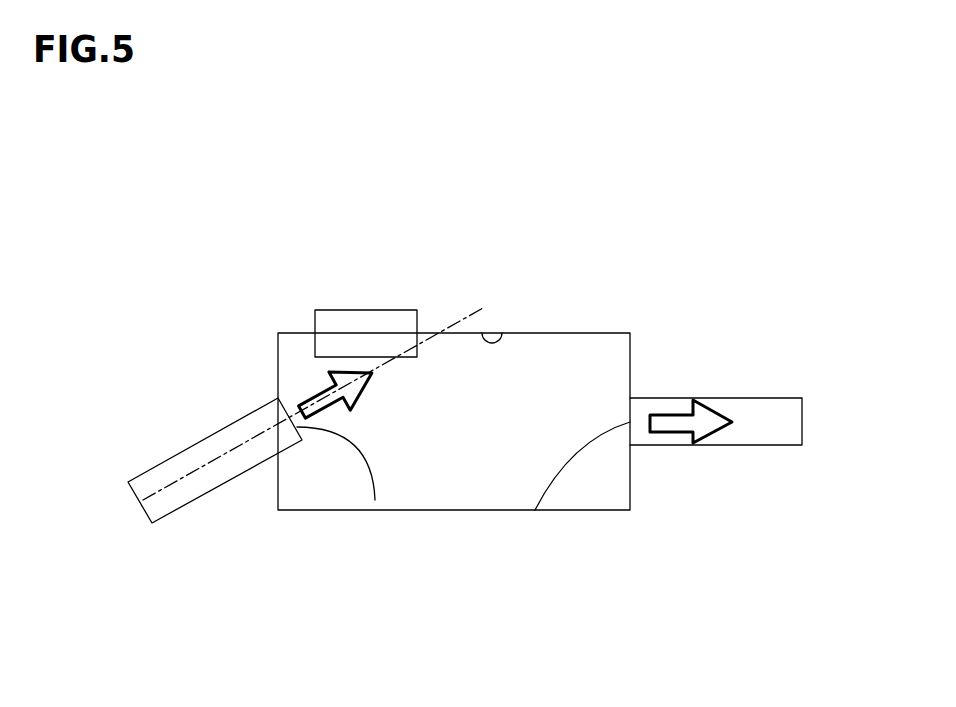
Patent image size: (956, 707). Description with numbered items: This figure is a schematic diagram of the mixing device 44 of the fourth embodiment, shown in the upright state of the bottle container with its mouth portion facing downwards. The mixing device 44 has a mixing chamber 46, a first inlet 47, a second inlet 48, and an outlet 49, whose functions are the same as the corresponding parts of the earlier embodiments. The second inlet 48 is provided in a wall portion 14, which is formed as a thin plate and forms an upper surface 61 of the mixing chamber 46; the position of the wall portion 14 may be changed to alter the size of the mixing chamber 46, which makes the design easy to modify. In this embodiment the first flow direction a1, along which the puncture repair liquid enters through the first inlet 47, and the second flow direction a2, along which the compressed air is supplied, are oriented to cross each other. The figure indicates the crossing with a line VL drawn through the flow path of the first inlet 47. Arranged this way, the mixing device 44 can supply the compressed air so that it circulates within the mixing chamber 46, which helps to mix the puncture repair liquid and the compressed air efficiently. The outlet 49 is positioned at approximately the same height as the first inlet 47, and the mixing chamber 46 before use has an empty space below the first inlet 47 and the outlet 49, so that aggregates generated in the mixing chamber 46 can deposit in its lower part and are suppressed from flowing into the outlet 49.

The wall portion 14 is at (588, 333).
The mixing device 44 is at (702, 310).
The mixing chamber 46 is at (522, 388).
The first inlet 47 is at (375, 500).
The second inlet 48 is at (330, 357).
The outlet 49 is at (535, 510).
The upper surface 61 is at (502, 338).
The virtual line VL is at (470, 315).
The first flow direction a1 is at (320, 392).
The second flow direction a2 is at (713, 433).